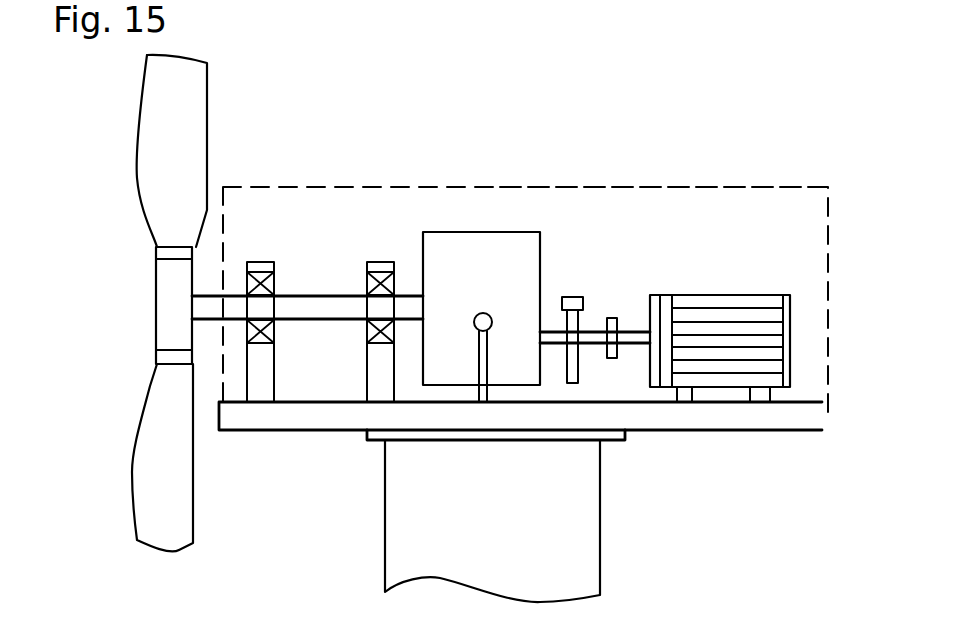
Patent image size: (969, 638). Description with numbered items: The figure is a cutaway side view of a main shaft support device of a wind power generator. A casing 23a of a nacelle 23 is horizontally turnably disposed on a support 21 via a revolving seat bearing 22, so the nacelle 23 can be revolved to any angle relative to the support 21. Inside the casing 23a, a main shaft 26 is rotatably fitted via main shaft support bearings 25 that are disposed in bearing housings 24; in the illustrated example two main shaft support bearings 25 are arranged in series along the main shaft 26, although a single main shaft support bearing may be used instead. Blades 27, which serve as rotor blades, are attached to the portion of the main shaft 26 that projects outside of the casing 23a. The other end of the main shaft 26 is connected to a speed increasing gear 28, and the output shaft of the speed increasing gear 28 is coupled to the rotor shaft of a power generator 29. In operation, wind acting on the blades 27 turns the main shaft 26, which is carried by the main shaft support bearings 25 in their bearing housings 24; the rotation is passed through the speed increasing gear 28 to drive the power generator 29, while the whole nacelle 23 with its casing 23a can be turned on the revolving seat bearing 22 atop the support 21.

The support 21 is at (568, 562).
The revolving seat bearing 22 is at (612, 439).
The nacelle 23 is at (337, 178).
The casing 23a is at (636, 185).
The bearing housing 24 is at (262, 262).
The main shaft support bearing 25 is at (277, 282).
The main shaft 26 is at (327, 327).
The blade 27 is at (163, 133).
The speed increasing gear 28 is at (503, 240).
The power generator 29 is at (729, 294).